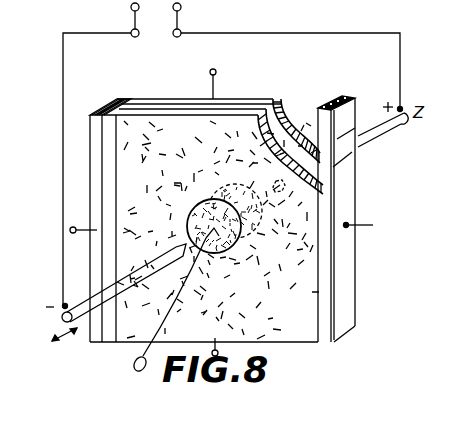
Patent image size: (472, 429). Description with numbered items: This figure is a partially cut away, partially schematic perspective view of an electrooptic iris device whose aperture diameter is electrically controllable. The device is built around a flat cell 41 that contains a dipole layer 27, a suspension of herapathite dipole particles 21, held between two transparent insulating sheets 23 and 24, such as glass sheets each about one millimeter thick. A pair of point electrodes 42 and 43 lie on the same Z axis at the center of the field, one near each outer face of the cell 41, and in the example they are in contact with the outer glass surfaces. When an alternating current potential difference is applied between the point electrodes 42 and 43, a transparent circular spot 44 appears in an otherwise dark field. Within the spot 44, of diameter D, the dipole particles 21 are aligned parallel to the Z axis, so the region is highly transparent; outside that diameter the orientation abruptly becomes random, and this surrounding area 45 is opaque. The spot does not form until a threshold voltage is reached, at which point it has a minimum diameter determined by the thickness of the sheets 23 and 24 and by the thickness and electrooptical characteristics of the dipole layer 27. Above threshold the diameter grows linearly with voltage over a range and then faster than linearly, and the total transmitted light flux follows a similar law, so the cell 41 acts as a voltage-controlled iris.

The dipole particles 21 is at (228, 248).
The transparent insulating sheet 23 is at (254, 98).
The transparent insulating sheet 24 is at (268, 115).
The dipole layer 27 is at (296, 149).
The flat cell 41 is at (133, 70).
The point electrode 42 is at (82, 311).
The point electrode 43 is at (390, 127).
The transparent circular spot 44 is at (242, 227).
The opaque area 45 is at (320, 343).